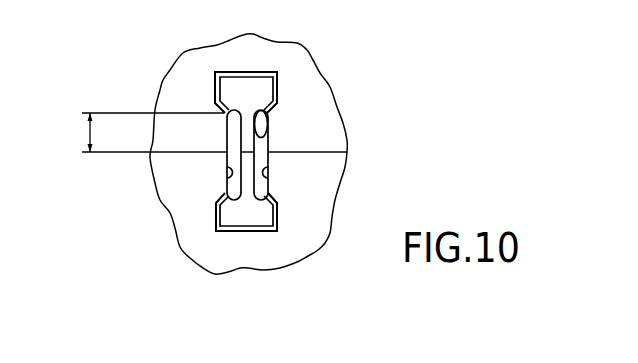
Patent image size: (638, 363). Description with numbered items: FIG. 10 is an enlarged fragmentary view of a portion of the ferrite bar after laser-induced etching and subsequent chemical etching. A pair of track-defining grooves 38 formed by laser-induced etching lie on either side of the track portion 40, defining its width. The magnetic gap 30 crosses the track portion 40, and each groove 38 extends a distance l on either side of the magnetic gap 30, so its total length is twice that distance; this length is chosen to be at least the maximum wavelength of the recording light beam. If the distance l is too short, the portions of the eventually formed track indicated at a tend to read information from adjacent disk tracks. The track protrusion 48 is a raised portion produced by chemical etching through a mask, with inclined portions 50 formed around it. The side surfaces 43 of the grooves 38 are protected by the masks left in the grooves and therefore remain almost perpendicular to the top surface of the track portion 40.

The magnetic gap 30 is at (336, 146).
The track-defining grooves 38 is at (228, 181).
The track portion 40 is at (249, 190).
The side surfaces 43 is at (261, 121).
The track protrusions 48 is at (207, 232).
The inclined portions 50 is at (258, 71).
The portions of the track a is at (268, 131).